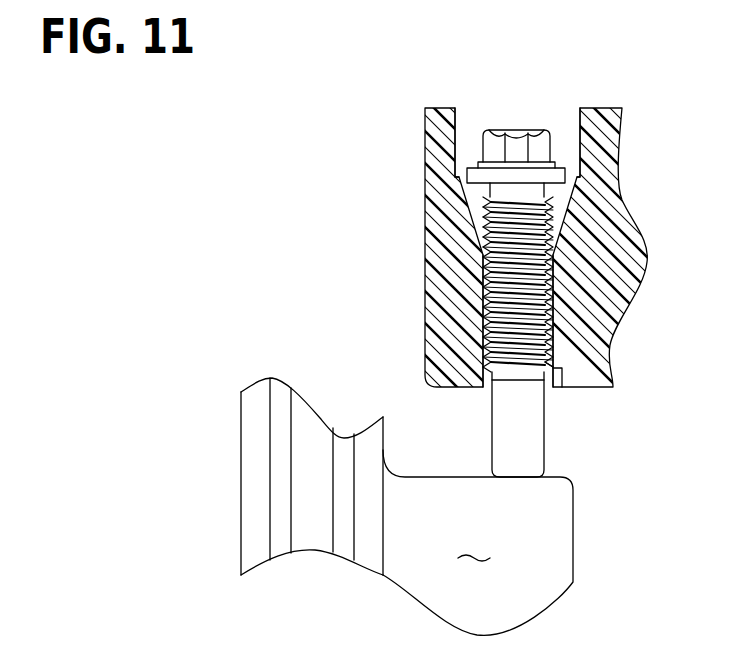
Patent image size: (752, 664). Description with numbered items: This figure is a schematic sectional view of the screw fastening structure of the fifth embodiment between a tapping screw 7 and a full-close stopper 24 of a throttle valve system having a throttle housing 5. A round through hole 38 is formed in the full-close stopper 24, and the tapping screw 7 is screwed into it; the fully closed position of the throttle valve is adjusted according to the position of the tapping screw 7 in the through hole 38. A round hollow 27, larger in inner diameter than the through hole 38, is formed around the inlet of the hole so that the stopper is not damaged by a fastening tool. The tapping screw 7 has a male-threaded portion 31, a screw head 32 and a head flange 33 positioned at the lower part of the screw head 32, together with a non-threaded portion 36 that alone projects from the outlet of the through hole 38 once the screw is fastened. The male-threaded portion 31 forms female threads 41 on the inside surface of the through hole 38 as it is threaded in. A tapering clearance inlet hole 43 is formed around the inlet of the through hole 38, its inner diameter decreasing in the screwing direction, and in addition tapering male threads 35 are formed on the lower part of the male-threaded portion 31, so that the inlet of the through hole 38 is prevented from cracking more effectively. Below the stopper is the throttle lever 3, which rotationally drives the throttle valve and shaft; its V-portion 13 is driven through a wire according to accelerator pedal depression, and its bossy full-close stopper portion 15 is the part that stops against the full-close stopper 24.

The throttle housing 5 is at (420, 126).
The round hollow 27 is at (466, 125).
The screw head 32 is at (517, 126).
The tapping screw 7 is at (506, 240).
The head flange 33 is at (557, 175).
The clearance inlet hole 43 is at (477, 194).
The full-close stopper 24 is at (612, 243).
The through hole 38 is at (482, 295).
The male-threaded portion 31 is at (555, 284).
The female threads 41 is at (495, 362).
The tapering male threads 35 is at (554, 377).
The non-threaded portion 36 is at (546, 438).
The throttle lever 3 is at (525, 542).
The full-close stopper portion 15 is at (474, 540).
The V-portion 13 is at (315, 518).